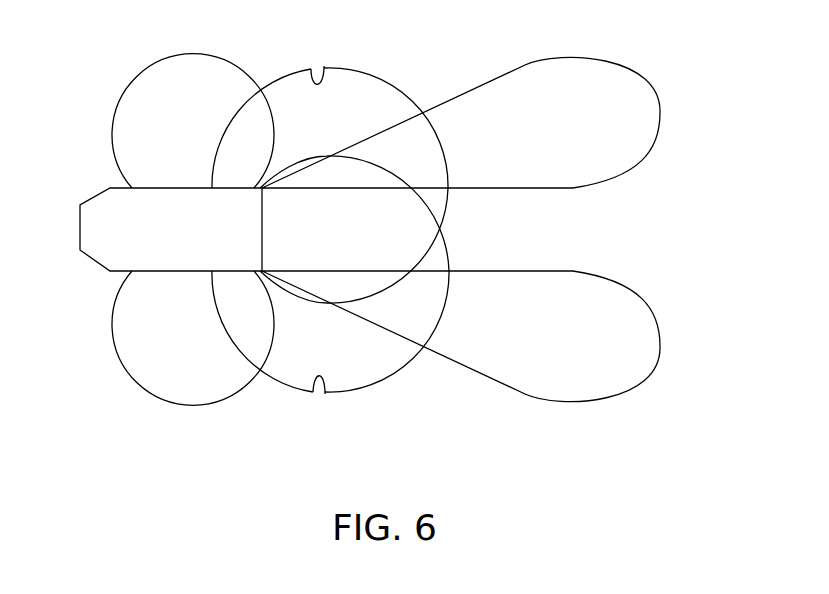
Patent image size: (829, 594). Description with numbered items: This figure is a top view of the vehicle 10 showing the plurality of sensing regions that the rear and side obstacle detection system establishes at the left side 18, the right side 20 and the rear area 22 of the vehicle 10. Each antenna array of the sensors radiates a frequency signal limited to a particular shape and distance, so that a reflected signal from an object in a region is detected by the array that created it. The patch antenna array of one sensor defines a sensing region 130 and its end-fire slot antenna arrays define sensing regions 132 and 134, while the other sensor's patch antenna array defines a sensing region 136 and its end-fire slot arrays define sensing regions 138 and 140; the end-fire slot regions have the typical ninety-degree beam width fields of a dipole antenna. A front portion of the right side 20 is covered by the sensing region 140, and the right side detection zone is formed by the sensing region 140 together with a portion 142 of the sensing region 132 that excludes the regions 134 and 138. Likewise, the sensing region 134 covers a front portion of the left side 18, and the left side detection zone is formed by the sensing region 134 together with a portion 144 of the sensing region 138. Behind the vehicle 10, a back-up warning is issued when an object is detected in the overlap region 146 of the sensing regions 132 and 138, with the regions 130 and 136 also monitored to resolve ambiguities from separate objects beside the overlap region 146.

The vehicle 10 is at (78, 228).
The left side 18 is at (165, 271).
The right side 20 is at (166, 187).
The rear area 22 is at (263, 232).
The sensing region 130 is at (659, 353).
The sensing region 132 is at (383, 78).
The sensing region 134 is at (179, 402).
The sensing region 136 is at (659, 103).
The sensing region 138 is at (386, 382).
The sensing region 140 is at (179, 56).
The portion 142 is at (324, 66).
The portion 144 is at (325, 394).
The overlap region 146 is at (393, 236).